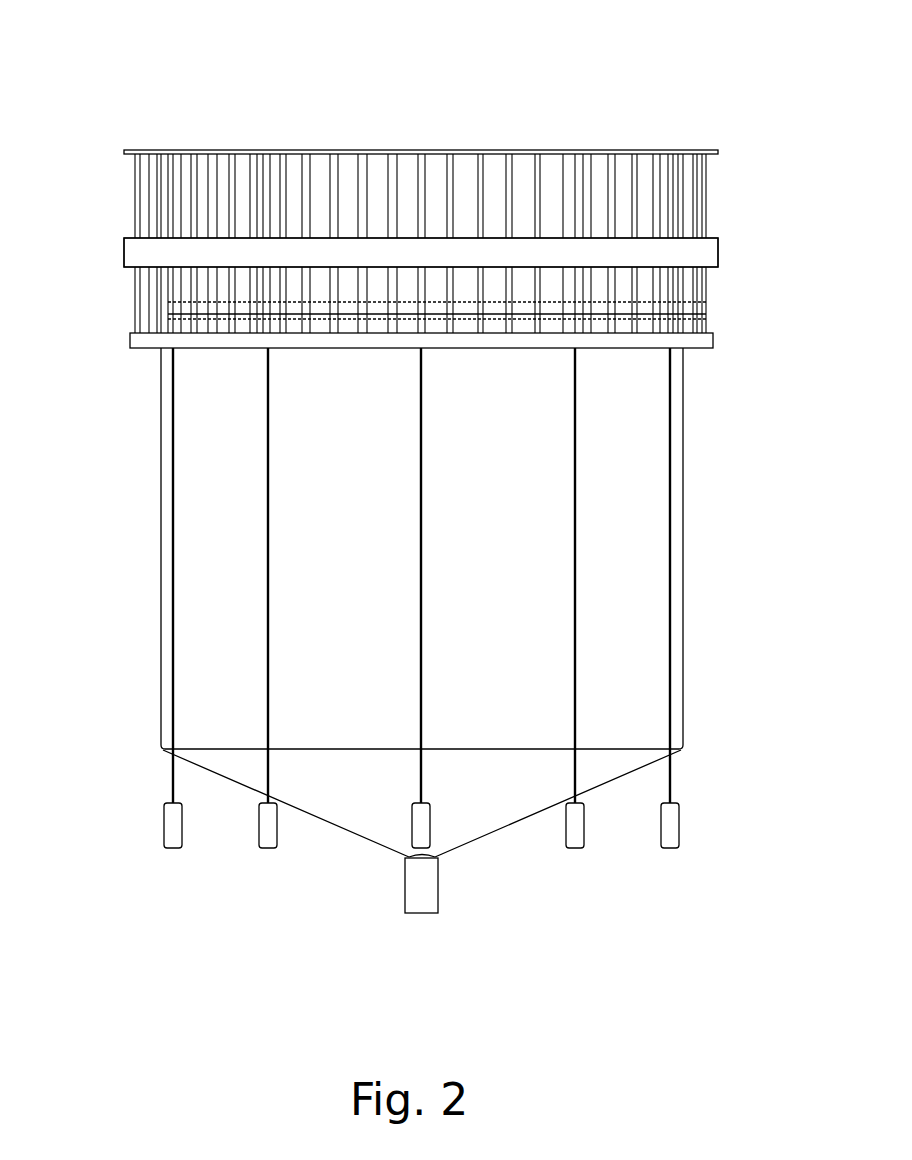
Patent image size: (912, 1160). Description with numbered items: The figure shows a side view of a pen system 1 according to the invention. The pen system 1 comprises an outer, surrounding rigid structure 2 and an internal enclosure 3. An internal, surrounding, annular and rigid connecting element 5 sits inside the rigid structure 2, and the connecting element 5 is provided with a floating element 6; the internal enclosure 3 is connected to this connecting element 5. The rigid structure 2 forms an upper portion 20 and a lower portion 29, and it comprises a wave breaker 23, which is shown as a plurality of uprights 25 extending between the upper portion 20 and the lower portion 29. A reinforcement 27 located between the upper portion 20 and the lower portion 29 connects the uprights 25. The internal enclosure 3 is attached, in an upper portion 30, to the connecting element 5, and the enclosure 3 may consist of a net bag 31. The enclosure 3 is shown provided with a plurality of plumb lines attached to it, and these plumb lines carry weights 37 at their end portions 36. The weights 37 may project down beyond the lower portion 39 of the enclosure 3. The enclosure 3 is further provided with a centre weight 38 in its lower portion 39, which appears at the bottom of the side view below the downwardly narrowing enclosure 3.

The pen system 1 is at (132, 100).
The upper portion 20 is at (143, 152).
The uprights 25 is at (652, 175).
The rigid structure 2 is at (187, 253).
The reinforcement 27 is at (638, 247).
The connecting element 5 is at (172, 305).
The wave breaker 23 is at (668, 295).
The floating element 6 is at (668, 317).
The lower portion 29 is at (133, 340).
The upper portion 30 is at (192, 355).
The net bag 31 is at (215, 477).
The internal enclosure 3 is at (212, 533).
The lower portion 39 is at (603, 732).
The centre weight 38 is at (438, 888).
The end portions 36 is at (672, 798).
The weights 37 is at (667, 828).